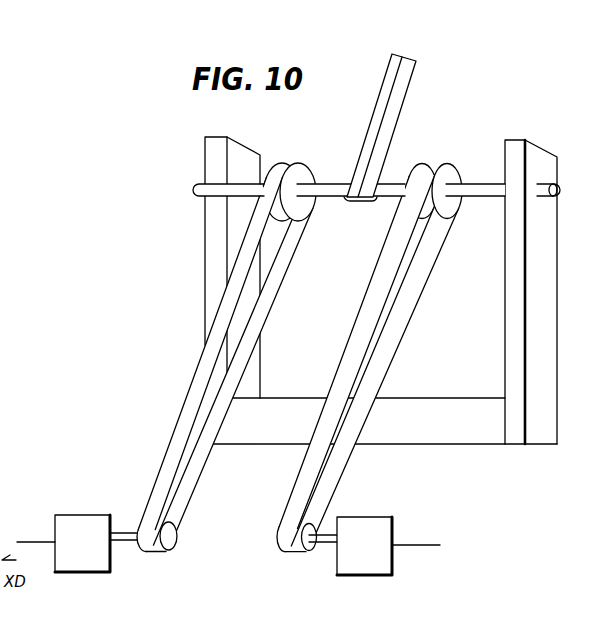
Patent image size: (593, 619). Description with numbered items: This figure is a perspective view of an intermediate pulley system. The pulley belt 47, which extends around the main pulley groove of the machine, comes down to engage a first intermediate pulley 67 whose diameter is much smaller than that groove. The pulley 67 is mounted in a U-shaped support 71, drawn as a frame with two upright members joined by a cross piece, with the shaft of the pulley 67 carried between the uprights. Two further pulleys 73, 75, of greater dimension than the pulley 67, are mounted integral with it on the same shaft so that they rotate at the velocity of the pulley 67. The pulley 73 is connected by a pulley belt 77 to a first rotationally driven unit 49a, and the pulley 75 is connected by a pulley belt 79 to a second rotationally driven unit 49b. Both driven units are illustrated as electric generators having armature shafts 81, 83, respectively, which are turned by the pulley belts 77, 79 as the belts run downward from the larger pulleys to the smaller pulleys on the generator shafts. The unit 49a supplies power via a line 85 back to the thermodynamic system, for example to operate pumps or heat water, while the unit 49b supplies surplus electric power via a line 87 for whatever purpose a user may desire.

The pulley belt 47 is at (393, 70).
The first intermediate pulley 67 is at (194, 186).
The U-shaped support 71 is at (210, 262).
The pulley 73 is at (298, 180).
The pulley 75 is at (447, 180).
The pulley belt 77 is at (173, 439).
The pulley belt 79 is at (422, 293).
The armature shaft 81 is at (172, 544).
The armature shaft 83 is at (280, 548).
The first rotationally driven unit 49a is at (103, 516).
The second rotationally driven unit 49b is at (373, 518).
The line 85 is at (42, 540).
The line 87 is at (437, 546).